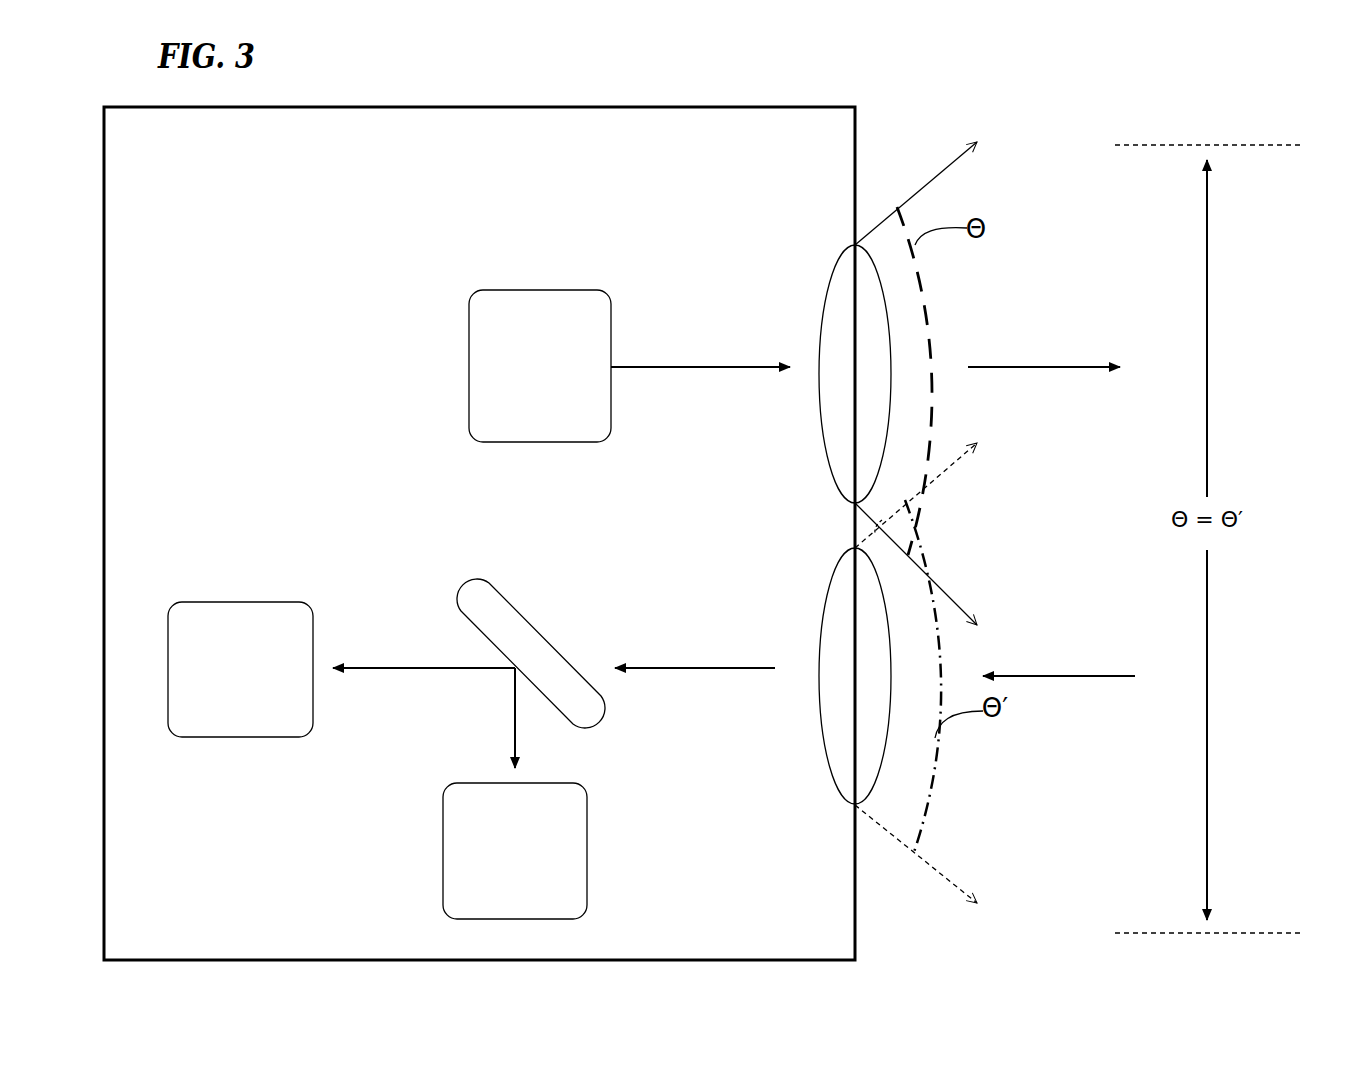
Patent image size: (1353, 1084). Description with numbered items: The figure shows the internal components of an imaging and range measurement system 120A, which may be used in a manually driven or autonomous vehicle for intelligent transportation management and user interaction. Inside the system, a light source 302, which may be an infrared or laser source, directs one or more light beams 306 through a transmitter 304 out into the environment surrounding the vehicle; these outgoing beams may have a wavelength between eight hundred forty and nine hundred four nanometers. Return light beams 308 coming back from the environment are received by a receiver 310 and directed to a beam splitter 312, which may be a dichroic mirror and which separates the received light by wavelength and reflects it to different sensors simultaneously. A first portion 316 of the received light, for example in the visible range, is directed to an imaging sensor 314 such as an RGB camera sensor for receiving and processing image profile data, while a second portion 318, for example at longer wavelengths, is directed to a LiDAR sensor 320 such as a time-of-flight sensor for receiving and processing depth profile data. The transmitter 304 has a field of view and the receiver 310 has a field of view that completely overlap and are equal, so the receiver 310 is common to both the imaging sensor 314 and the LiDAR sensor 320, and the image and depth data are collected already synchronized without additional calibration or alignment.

The imaging and range measurement system 120A is at (320, 244).
The light source 302 is at (523, 389).
The transmitter 304 is at (823, 297).
The light beams 306 is at (1036, 366).
The return light beams 308 is at (1045, 676).
The receiver 310 is at (820, 620).
The beam splitter 312 is at (555, 619).
The imaging sensor 314 is at (498, 886).
The first portion 316 is at (515, 740).
The second portion 318 is at (367, 668).
The LiDAR sensor 320 is at (223, 692).